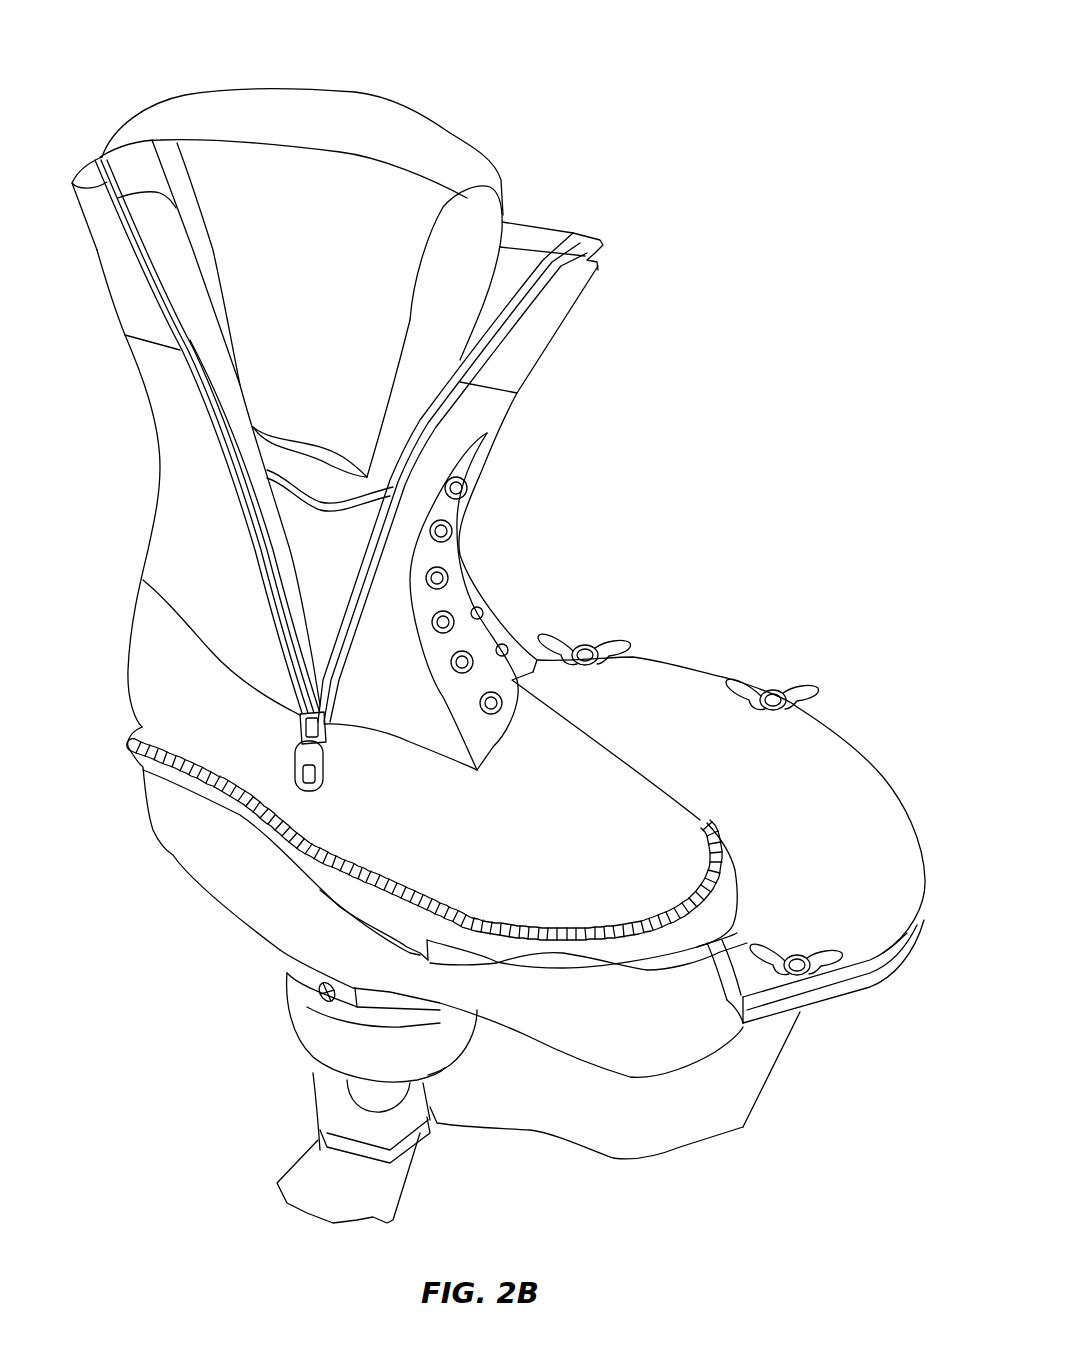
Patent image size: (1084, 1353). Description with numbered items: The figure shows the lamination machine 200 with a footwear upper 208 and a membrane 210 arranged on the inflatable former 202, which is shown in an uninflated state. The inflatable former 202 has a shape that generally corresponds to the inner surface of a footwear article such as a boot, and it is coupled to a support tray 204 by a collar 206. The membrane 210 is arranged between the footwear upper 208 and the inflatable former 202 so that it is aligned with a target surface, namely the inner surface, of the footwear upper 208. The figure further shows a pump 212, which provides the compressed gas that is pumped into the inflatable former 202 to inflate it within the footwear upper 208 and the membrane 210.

The boot 200 is at (174, 72).
The tongue 202 is at (310, 255).
The ball joint 204 is at (327, 1042).
The screw 206 is at (310, 983).
The sole plate 208 is at (533, 772).
The welt 210 is at (497, 952).
The base plate 212 is at (813, 840).